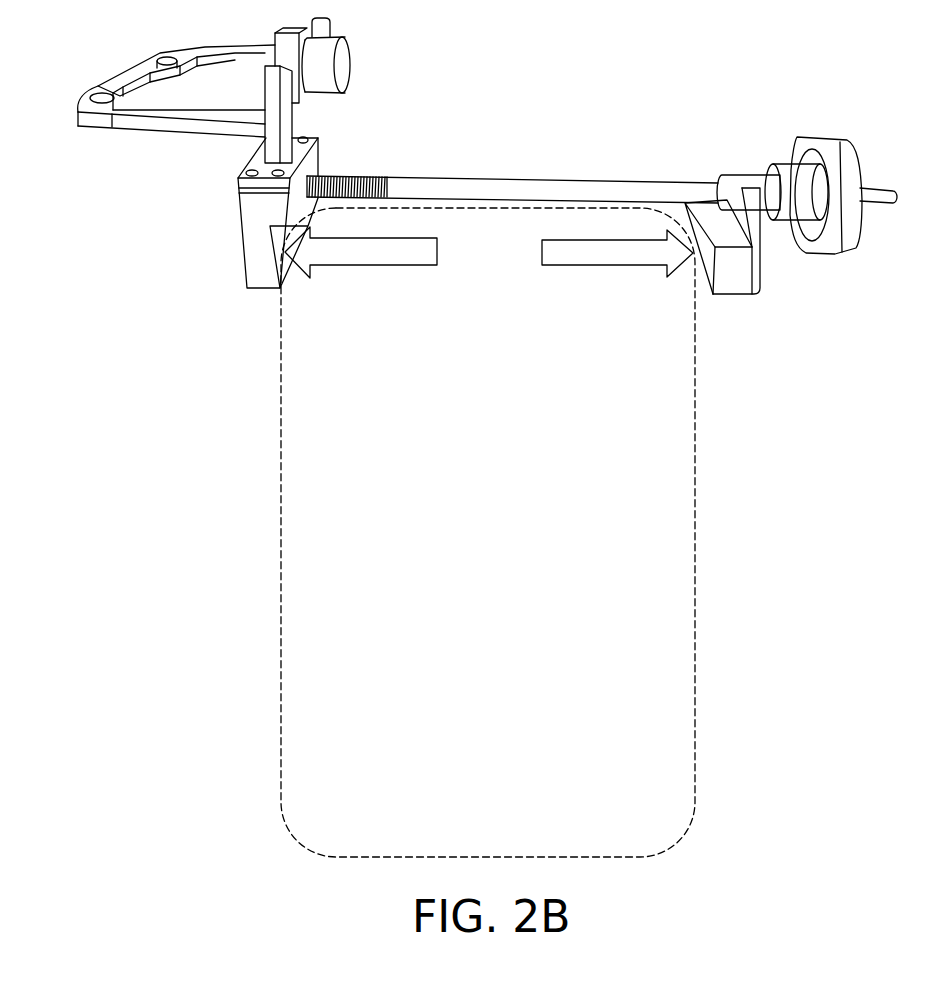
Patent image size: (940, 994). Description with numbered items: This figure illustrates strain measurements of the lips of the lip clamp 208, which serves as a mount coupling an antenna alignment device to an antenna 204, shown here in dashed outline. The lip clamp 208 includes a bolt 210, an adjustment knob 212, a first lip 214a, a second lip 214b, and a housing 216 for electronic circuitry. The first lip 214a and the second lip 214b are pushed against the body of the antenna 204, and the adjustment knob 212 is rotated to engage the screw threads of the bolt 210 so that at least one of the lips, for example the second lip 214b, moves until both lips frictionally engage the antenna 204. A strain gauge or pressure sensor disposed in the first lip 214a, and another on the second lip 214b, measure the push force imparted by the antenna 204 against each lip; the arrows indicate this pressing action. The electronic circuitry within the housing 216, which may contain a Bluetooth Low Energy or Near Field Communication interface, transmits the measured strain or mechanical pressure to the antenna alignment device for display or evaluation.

The antenna 204 is at (697, 546).
The lip clamp 208 is at (523, 162).
The bolt 210 is at (897, 204).
The adjustment knob 212 is at (820, 143).
The first lip 214a is at (258, 273).
The second lip 214b is at (750, 296).
The housing 216 is at (272, 137).